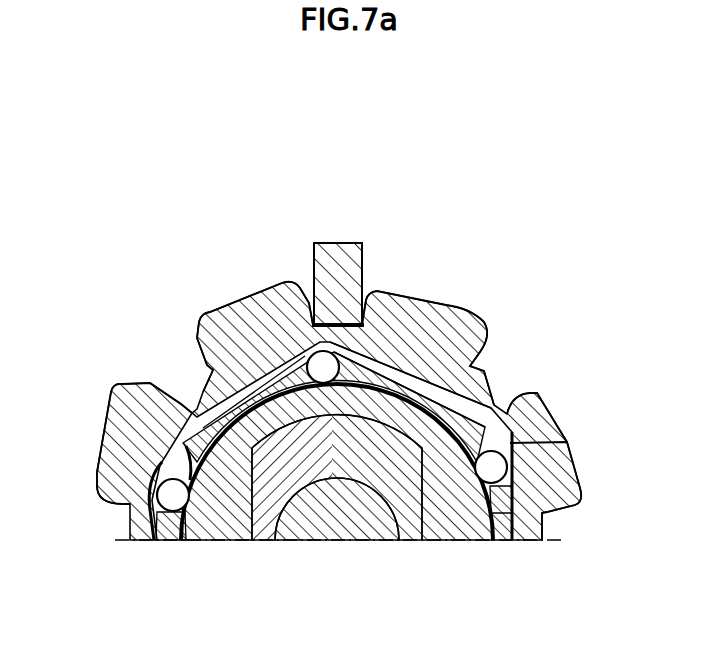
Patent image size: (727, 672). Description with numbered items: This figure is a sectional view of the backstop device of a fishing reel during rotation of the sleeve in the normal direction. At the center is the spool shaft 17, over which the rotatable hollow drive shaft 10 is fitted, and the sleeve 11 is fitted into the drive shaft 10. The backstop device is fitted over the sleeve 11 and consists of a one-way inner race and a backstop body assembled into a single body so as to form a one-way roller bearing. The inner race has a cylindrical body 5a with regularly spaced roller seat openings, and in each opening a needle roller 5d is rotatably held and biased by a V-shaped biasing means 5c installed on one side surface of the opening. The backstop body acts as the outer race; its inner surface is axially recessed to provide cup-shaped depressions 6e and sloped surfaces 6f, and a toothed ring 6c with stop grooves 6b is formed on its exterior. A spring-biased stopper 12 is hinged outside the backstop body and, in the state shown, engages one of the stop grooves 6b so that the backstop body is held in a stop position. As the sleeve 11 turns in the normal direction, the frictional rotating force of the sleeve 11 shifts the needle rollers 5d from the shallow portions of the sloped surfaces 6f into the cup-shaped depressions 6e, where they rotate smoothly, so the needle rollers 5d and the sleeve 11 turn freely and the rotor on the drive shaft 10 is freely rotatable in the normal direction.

The cylindrical body 5a is at (217, 417).
The biasing means 5c is at (113, 432).
The needle roller 5d is at (318, 358).
The stop groove 6b is at (497, 398).
The toothed ring 6c is at (440, 312).
The cup-shaped depression 6e is at (512, 443).
The sloped surface 6f is at (503, 418).
The drive shaft 10 is at (256, 538).
The sleeve 11 is at (205, 540).
The stopper 12 is at (343, 252).
The spool shaft 17 is at (336, 536).